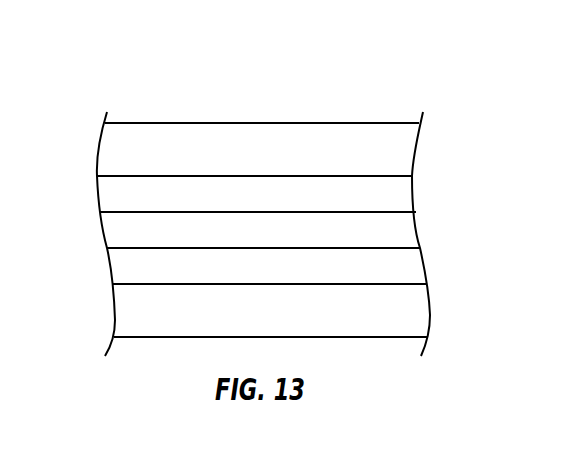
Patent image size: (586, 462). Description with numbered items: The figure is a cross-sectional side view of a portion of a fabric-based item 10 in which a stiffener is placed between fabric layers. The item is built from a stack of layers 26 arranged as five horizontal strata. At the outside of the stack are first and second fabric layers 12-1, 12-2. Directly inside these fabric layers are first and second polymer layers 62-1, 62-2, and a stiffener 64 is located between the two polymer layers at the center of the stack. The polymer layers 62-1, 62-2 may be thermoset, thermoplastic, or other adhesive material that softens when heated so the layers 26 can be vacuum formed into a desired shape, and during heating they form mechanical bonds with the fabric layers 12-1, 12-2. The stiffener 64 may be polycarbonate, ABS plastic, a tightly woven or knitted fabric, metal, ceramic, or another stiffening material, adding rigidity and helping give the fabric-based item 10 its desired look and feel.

The fabric-based item 10 is at (372, 71).
The first fabric layer 12-1 is at (110, 150).
The first polymer layer 62-1 is at (108, 194).
The stiffener 64 is at (112, 229).
The second polymer layer 62-2 is at (116, 271).
The second fabric layer 12-2 is at (124, 314).
The layers 26 is at (455, 121).